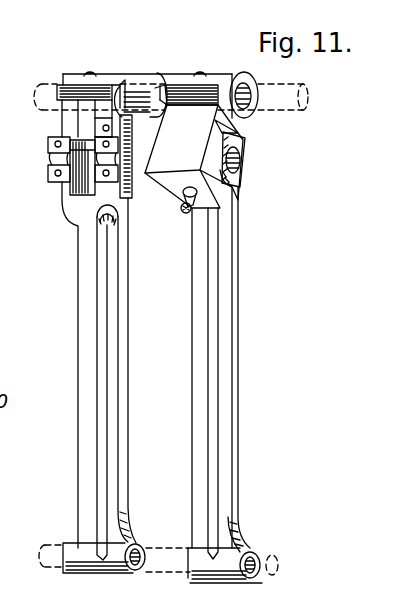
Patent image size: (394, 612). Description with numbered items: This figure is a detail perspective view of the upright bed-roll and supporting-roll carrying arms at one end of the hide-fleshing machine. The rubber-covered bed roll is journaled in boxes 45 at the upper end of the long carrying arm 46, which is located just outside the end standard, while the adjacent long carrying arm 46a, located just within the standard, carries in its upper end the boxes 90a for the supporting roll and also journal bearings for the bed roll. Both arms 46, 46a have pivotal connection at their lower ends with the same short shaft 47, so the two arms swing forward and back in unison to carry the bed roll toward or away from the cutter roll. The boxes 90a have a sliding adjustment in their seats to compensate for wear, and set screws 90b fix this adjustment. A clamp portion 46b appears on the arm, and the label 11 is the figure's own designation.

The boxes 45 is at (127, 72).
The carrying arms 46 is at (80, 343).
The carrying arms 46a is at (237, 258).
The clamp 46b is at (53, 157).
The short shafts 47 is at (172, 565).
The boxes 90a is at (242, 157).
The set screws 90b is at (180, 213).
The reference 11 is at (0, 230).